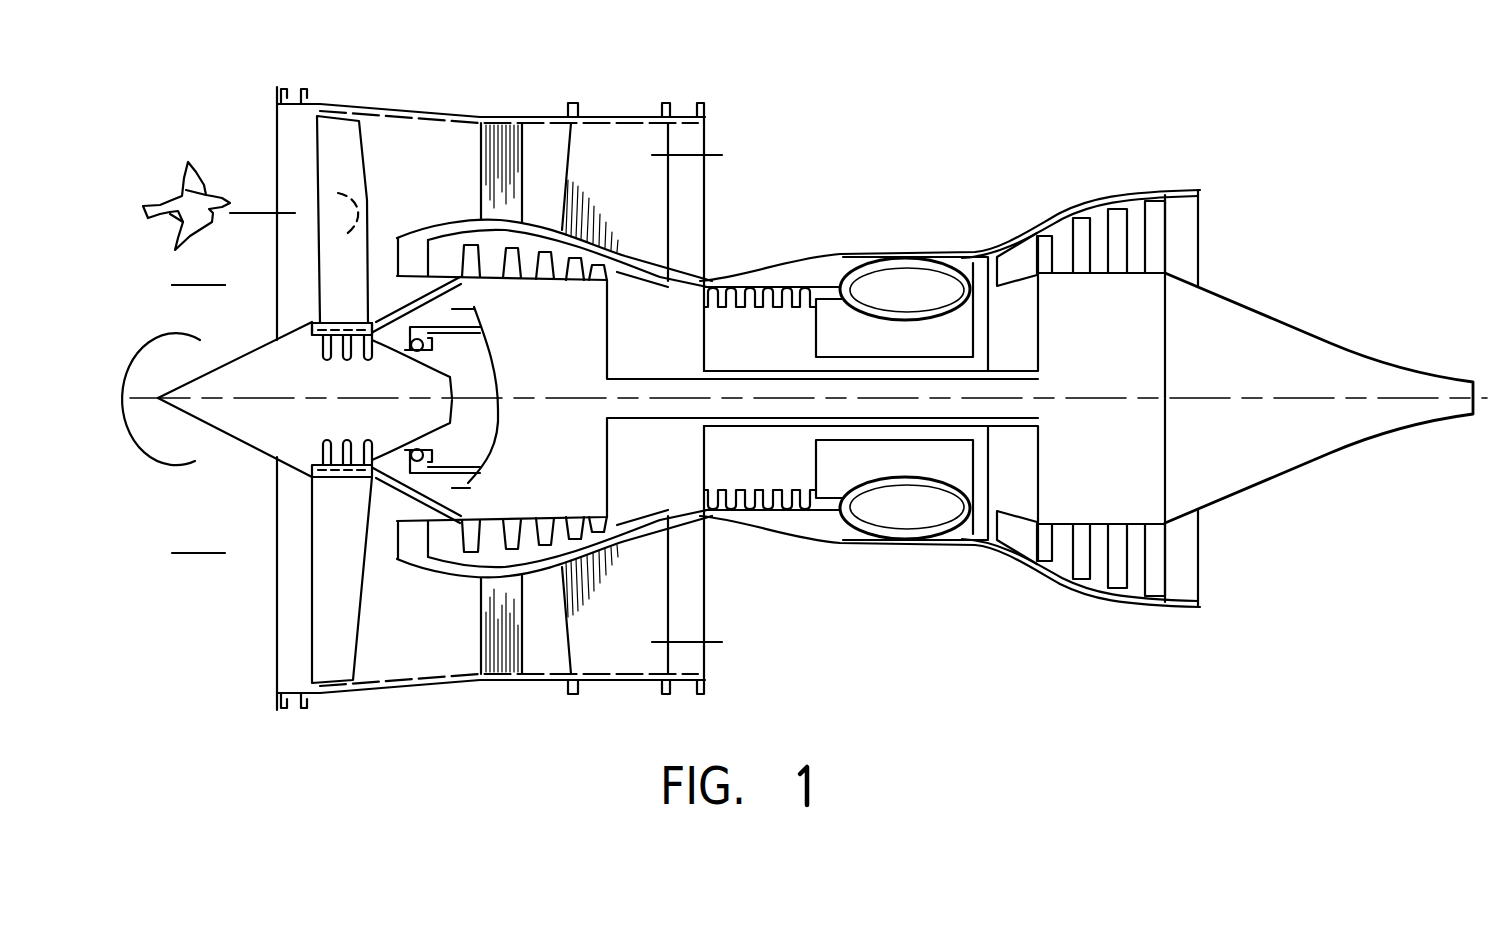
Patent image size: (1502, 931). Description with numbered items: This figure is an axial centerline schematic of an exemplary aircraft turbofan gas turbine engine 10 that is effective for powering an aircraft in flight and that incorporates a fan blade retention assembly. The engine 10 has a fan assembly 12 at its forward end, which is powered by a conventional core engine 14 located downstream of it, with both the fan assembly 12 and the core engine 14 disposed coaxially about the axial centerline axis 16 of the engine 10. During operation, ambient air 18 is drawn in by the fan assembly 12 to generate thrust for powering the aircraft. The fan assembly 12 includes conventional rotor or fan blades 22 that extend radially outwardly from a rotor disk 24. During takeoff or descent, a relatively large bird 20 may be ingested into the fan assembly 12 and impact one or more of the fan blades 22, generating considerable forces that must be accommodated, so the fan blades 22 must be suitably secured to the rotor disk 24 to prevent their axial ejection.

The turbofan gas turbine engine 10 is at (804, 396).
The fan assembly 12 is at (372, 148).
The core engine 14 is at (787, 543).
The axial centerline axis 16 is at (1235, 390).
The ambient air 18 is at (195, 287).
The bird 20 is at (197, 177).
The fan blades 22 is at (373, 243).
The rotor disk 24 is at (312, 350).